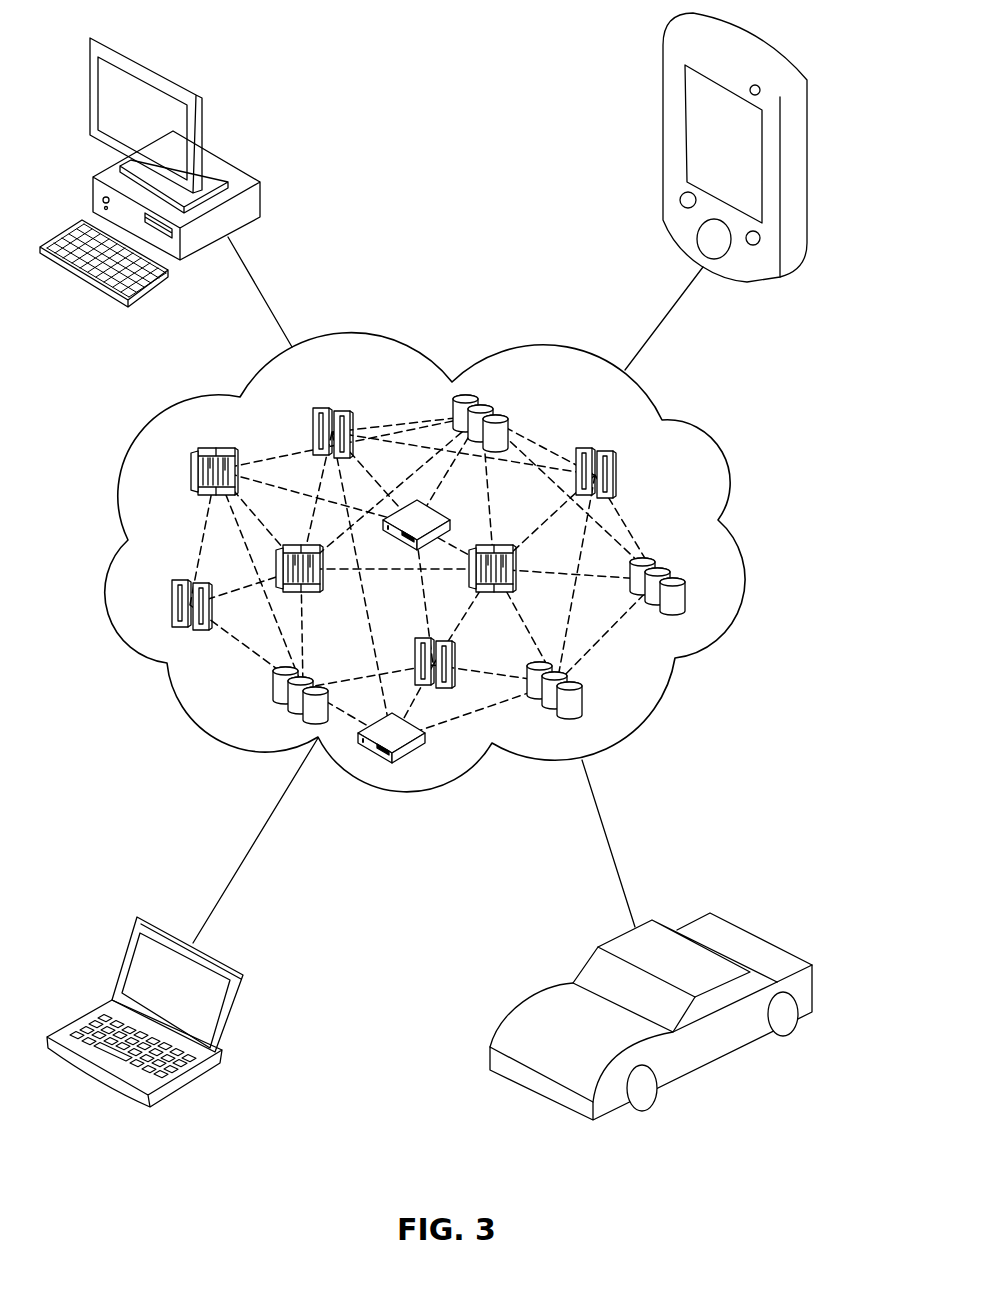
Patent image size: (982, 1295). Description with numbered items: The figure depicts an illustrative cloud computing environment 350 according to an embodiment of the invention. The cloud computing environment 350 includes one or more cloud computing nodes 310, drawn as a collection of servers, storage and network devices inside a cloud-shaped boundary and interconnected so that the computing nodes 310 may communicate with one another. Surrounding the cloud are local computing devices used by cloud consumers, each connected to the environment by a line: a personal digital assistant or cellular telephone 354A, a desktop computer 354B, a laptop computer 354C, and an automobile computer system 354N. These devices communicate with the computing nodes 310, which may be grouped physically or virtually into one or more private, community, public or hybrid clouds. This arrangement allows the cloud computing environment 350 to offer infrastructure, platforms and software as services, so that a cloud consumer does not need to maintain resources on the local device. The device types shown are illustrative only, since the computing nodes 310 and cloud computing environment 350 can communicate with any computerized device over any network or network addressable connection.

The cloud computing nodes 310 is at (660, 497).
The cloud computing environment 350 is at (718, 637).
The personal digital assistant (PDA) or cellular telephone 354A is at (663, 93).
The desktop computer 354B is at (260, 193).
The laptop computer 354C is at (247, 985).
The automobile computer system 354N is at (815, 983).